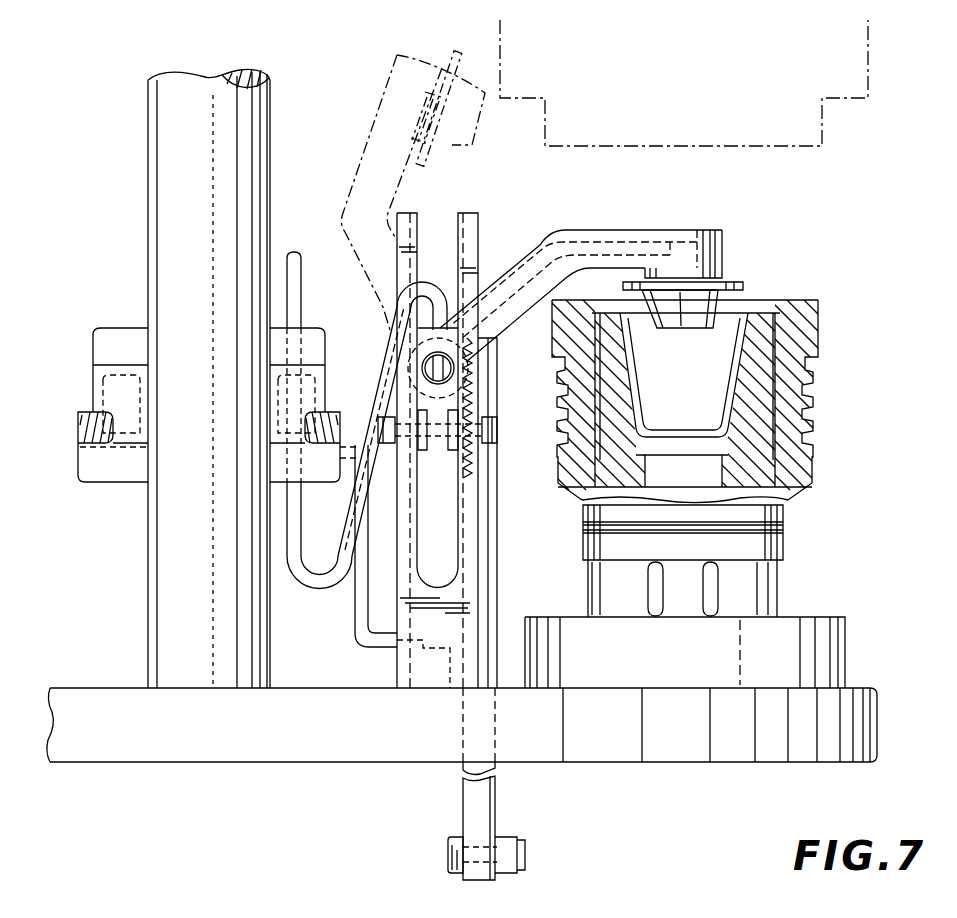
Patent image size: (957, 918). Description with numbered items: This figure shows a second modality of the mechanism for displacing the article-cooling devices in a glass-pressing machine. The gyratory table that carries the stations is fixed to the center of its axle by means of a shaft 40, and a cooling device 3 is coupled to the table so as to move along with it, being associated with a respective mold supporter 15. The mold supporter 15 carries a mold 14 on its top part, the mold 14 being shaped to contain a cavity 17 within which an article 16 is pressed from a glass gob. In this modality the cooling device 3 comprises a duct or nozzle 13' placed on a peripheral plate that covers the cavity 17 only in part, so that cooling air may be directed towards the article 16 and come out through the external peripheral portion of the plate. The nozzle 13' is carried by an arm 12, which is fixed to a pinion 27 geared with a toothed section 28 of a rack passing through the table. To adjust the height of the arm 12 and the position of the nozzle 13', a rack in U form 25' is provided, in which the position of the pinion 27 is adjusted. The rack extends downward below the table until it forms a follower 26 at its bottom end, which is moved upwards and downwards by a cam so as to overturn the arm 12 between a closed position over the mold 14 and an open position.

The shaft 40 is at (162, 178).
The cooling device 3 is at (506, 267).
The arm 12 is at (725, 232).
The duct or nozzle 13' is at (610, 189).
The cavity 17 is at (722, 335).
The article 16 is at (733, 407).
The mold 14 is at (810, 463).
The mold supporter 15 is at (770, 585).
The pinion 27 is at (498, 368).
The toothed section 28 is at (470, 400).
The U-shaped rack 25' is at (378, 470).
The follower 26 is at (507, 837).